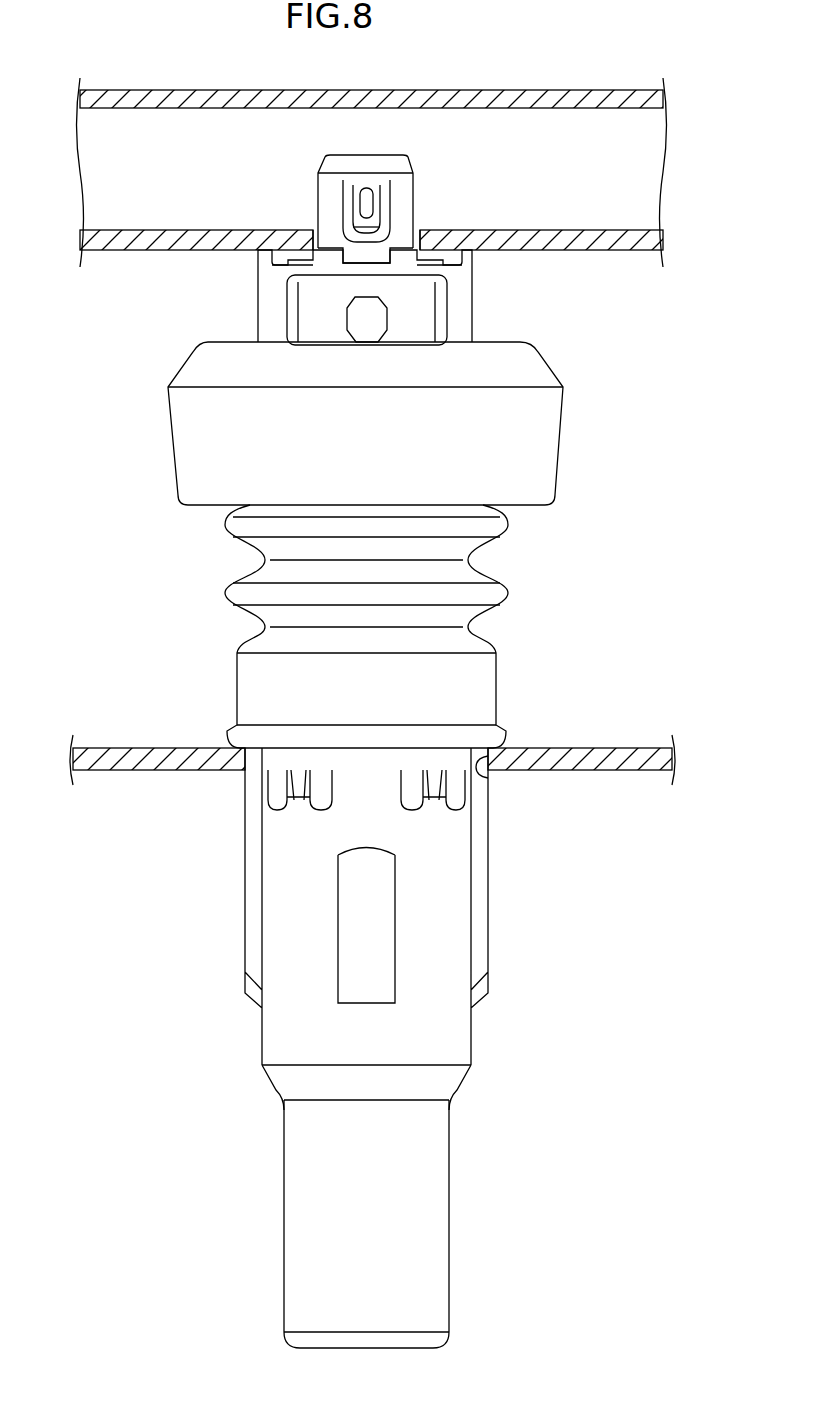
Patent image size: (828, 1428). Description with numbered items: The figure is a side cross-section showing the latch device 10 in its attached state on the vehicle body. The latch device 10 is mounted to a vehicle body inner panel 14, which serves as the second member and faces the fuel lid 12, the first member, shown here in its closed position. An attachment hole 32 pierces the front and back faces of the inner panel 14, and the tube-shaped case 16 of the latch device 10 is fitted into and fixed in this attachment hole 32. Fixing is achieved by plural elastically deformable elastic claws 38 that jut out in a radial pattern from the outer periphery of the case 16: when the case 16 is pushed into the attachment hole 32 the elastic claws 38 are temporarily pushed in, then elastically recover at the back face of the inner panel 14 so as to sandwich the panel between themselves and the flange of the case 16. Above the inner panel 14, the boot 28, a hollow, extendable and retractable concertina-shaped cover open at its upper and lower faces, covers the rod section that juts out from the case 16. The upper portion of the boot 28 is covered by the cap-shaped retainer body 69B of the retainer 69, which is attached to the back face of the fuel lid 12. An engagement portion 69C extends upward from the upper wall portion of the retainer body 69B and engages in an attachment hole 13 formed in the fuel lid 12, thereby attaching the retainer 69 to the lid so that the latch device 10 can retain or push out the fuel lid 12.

The latch device 10 is at (212, 927).
The fuel lid 12 is at (600, 90).
The attachment hole 13 is at (326, 238).
The vehicle body inner panel 14 is at (612, 742).
The case 16 is at (282, 1178).
The boot 28 is at (490, 575).
The attachment hole 32 is at (480, 757).
The elastic claws 38 is at (297, 780).
The retainer 69 is at (582, 380).
The retainer body 69B is at (546, 430).
The engagement portion 69C is at (403, 193).